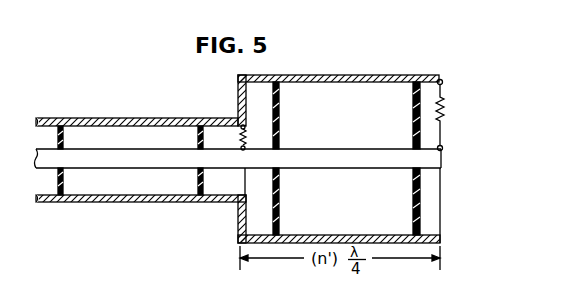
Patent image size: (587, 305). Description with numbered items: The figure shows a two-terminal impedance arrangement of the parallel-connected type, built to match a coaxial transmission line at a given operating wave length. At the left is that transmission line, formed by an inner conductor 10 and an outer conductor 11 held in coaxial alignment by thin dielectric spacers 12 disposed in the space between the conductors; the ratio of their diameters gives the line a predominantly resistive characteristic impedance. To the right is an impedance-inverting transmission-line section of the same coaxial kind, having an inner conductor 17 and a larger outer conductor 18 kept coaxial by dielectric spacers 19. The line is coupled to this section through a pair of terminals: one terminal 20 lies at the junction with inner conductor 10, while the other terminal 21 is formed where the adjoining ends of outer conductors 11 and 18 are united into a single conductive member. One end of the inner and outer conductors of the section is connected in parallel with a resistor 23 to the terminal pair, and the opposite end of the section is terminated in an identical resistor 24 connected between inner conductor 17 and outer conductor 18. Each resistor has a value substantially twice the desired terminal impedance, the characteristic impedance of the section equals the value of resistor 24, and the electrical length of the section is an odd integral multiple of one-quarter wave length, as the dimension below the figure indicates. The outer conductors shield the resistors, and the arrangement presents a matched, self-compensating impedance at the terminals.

The inner conductor 10 is at (146, 169).
The outer conductor 11 is at (140, 118).
The dielectric spacers 12 is at (64, 176).
The inner conductor 17 is at (306, 168).
The outer conductor 18 is at (358, 74).
The dielectric spacers 19 is at (280, 110).
The terminal 20 is at (234, 181).
The terminal 21 is at (237, 118).
The resistor 23 is at (247, 126).
The resistor 24 is at (444, 115).